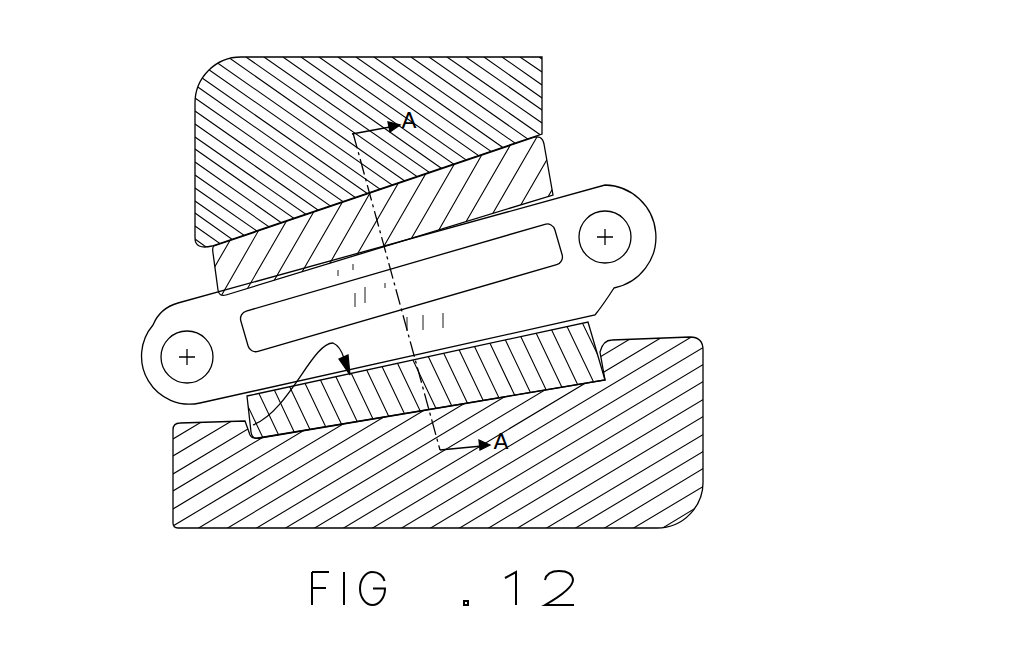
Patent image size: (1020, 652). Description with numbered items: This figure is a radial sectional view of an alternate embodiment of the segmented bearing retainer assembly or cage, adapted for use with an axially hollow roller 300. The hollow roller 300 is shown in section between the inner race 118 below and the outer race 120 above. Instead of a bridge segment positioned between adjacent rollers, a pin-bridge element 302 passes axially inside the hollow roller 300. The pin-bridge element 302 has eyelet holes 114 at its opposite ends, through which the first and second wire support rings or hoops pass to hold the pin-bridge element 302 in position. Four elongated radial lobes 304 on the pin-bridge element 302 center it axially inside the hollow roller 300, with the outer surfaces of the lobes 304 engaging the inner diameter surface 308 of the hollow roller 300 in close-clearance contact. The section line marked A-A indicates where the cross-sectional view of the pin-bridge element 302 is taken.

The eyelet holes 114 is at (606, 240).
The inner race 118 is at (658, 413).
The outer race 120 is at (487, 90).
The hollow roller 300 is at (520, 172).
The pin-bridge element 302 is at (223, 313).
The elongated radial lobes 304 is at (294, 296).
The inner diameter surface 308 is at (298, 358).